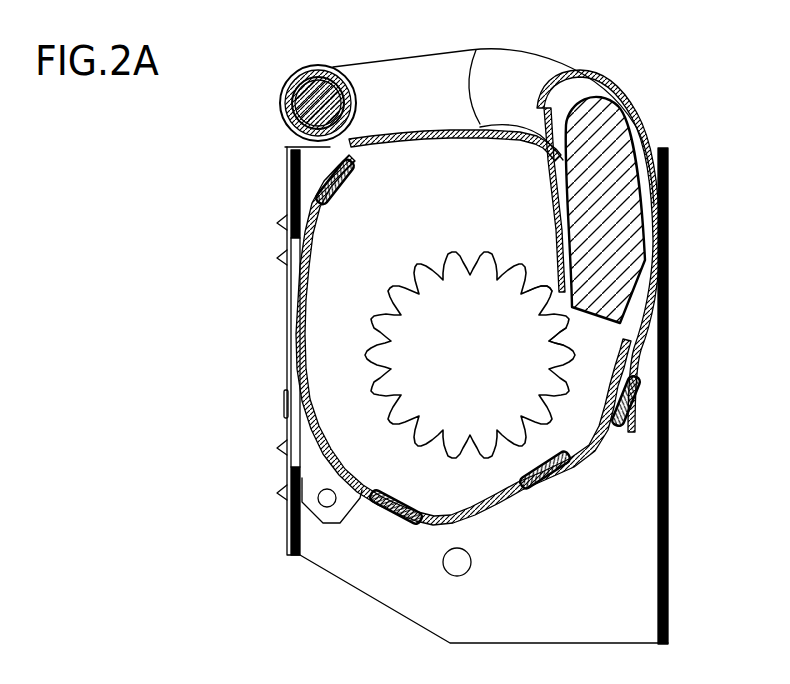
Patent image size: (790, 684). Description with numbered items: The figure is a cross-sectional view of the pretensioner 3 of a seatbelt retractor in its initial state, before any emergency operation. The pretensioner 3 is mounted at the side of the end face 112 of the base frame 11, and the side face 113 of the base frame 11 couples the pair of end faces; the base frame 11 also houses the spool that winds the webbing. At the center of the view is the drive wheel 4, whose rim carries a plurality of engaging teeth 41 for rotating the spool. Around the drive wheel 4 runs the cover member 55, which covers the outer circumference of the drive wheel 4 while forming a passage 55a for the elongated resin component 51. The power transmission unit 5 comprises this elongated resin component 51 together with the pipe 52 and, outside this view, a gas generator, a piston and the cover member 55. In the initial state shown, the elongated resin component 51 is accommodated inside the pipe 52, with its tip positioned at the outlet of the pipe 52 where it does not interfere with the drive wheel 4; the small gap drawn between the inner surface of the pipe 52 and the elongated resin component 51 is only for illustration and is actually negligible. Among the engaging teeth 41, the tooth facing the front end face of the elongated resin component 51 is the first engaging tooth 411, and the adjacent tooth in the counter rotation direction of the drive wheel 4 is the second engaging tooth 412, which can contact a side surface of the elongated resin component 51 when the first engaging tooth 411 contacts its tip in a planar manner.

The pretensioner 3 is at (194, 190).
The drive wheel 4 is at (475, 361).
The power transmission unit 5 is at (600, 57).
The base frame 11 is at (686, 402).
The engaging teeth 41 is at (397, 288).
The elongated resin component 51 is at (300, 101).
The pipe 52 is at (395, 68).
The cover member 55 is at (352, 494).
The passage 55a is at (341, 312).
The end face 112 is at (596, 594).
The side face 113 is at (669, 510).
The first engaging tooth 411 is at (562, 347).
The second engaging tooth 412 is at (544, 282).